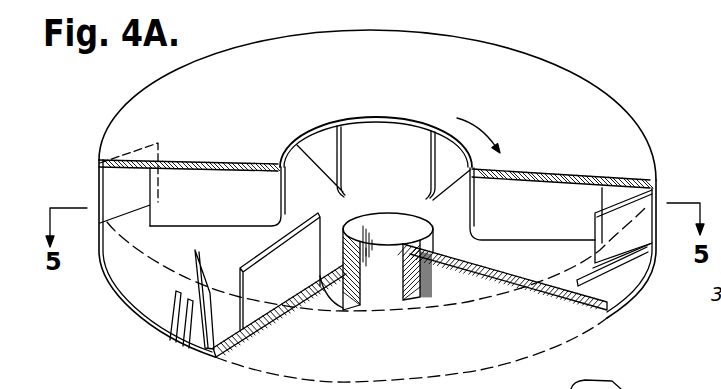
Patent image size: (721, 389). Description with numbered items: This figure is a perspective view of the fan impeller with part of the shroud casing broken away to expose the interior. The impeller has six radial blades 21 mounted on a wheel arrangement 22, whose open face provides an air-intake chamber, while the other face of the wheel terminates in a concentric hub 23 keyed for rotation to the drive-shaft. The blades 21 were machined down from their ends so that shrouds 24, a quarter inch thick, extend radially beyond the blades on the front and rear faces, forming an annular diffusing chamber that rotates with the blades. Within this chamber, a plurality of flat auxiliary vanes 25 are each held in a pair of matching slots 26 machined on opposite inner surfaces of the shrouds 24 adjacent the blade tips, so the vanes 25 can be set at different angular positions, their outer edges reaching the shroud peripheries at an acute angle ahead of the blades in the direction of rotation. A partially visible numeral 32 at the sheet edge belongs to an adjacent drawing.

The radial blades 21 is at (265, 262).
The wheel arrangement 22 is at (392, 198).
The concentric hub 23 is at (352, 310).
The shrouds 24 is at (126, 165).
The auxiliary vanes 25 is at (232, 337).
The slots 26 is at (192, 340).
The element 32 is at (575, 381).